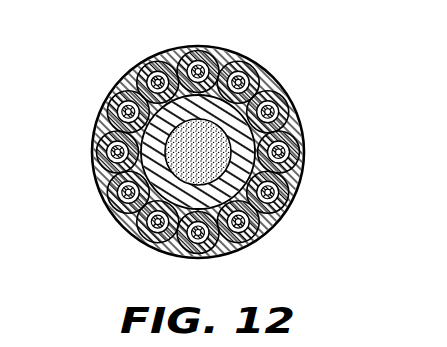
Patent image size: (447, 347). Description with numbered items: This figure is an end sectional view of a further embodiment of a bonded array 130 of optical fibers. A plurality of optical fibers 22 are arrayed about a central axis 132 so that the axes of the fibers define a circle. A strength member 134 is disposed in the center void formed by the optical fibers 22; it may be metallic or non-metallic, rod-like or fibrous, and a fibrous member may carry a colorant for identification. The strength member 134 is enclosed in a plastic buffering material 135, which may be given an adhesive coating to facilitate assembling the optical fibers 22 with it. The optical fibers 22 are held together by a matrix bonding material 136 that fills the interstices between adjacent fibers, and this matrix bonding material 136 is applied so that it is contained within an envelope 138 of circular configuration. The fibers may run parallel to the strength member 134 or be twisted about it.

The array 130 is at (204, 134).
The envelope 138 is at (166, 47).
The matrix bonding material 136 is at (262, 80).
The strength member 134 is at (181, 186).
The central axis 132 is at (199, 154).
The plastic buffering material 135 is at (130, 129).
The optical fiber 22 is at (288, 167).